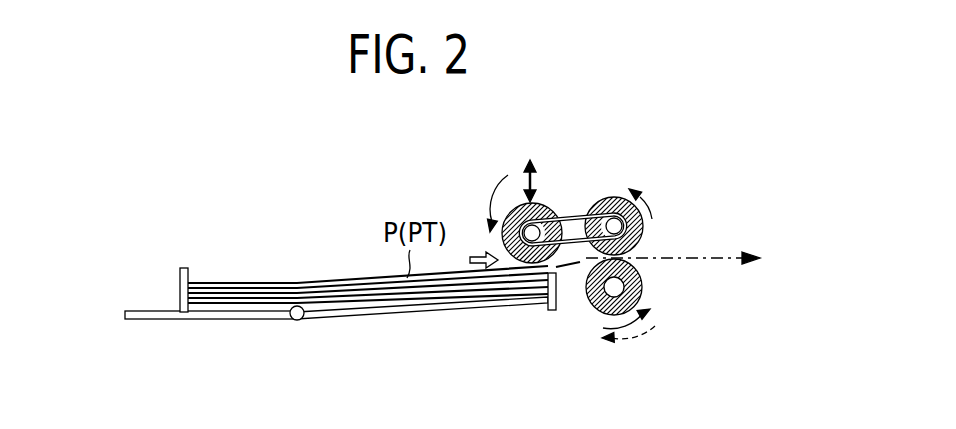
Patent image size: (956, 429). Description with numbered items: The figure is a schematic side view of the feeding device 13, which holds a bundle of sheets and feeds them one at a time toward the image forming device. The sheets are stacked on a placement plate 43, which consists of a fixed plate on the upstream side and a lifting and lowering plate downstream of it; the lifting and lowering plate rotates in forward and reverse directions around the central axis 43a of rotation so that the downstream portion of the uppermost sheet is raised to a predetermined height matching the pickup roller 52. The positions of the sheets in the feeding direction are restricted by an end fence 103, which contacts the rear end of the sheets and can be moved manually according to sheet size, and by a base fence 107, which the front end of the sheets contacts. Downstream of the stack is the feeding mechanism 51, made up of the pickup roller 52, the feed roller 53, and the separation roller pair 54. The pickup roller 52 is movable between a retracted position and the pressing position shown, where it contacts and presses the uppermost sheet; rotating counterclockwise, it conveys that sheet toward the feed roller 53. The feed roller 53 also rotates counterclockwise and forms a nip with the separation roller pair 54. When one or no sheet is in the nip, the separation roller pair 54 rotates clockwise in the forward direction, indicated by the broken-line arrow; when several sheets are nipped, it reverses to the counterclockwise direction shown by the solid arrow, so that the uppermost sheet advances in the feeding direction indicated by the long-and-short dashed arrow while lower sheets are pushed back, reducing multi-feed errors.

The feeding device 13 is at (338, 190).
The end fence 103 is at (180, 285).
The placement plate 43 is at (462, 308).
The central axis of rotation 43a is at (297, 321).
The base fence 107 is at (557, 297).
The feeding mechanism 51 is at (668, 203).
The pickup roller 52 is at (515, 207).
The feed roller 53 is at (607, 199).
The separation roller pair 54 is at (643, 291).